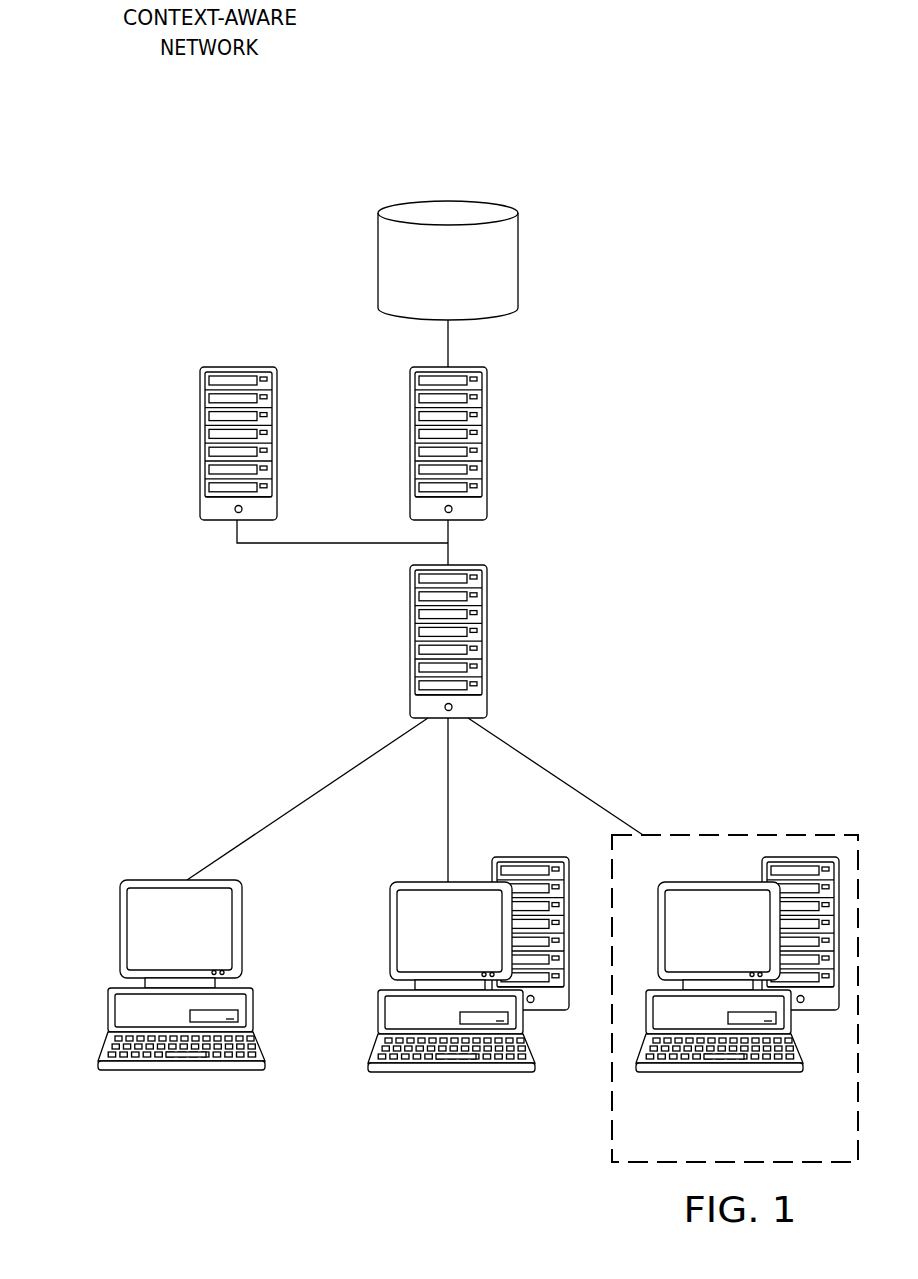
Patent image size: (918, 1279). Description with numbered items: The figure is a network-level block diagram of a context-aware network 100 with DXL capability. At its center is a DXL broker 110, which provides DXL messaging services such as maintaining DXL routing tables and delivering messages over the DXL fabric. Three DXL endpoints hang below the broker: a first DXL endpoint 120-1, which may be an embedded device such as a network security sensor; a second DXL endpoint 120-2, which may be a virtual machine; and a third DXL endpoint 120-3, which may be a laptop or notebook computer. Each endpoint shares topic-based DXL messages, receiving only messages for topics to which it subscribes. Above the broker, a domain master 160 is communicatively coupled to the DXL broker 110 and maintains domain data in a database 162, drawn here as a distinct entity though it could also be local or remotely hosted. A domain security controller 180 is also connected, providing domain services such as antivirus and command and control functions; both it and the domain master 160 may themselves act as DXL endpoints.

The context-aware network 100 is at (232, 124).
The DXL broker 110 is at (487, 640).
The DXL endpoint 120-1 is at (160, 1070).
The DXL endpoint 120-2 is at (450, 1072).
The DXL endpoint 120-3 is at (717, 1072).
The domain master 160 is at (487, 447).
The database 162 is at (378, 264).
The domain security controller 180 is at (200, 445).